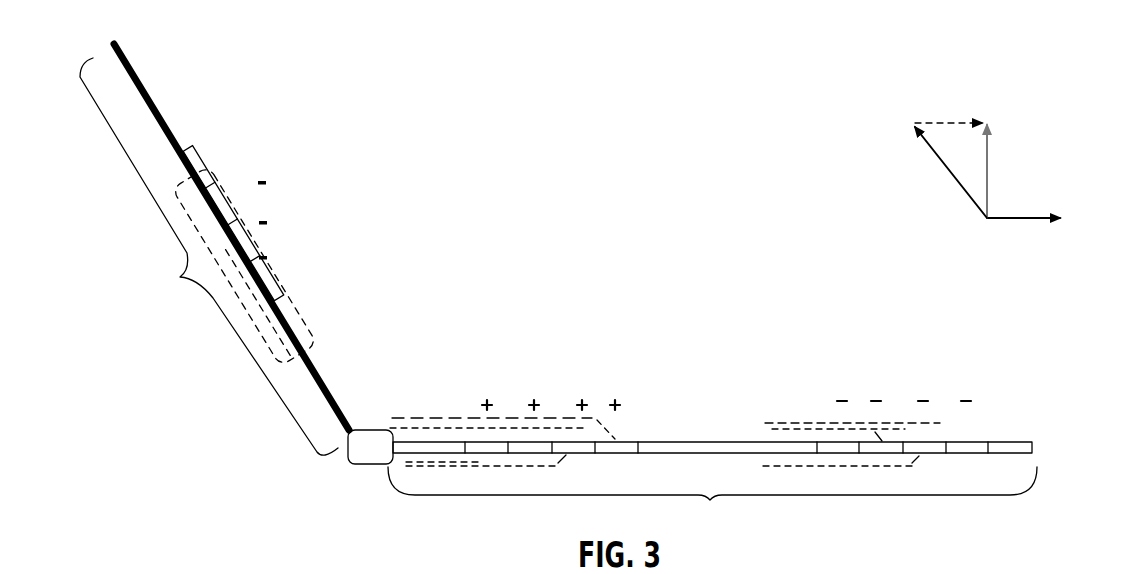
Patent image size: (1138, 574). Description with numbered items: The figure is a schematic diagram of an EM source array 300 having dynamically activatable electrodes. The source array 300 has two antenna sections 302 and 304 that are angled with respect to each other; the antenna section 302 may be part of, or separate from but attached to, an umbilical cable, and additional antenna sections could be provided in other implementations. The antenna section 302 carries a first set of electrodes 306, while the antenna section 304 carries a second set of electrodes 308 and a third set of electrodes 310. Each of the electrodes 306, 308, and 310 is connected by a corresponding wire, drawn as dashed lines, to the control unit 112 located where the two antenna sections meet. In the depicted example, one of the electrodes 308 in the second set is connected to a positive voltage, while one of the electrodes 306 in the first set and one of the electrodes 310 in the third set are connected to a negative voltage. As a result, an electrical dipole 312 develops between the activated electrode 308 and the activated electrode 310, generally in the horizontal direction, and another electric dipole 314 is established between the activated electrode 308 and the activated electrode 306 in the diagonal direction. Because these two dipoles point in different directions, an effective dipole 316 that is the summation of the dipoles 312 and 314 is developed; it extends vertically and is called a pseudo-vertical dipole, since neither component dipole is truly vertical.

The source array 300 is at (130, 219).
The antenna section 302 is at (214, 249).
The antenna section 304 is at (712, 491).
The first set of electrodes 306 is at (257, 280).
The second set of electrodes 308 is at (610, 448).
The third set of electrodes 310 is at (968, 447).
The electrical dipole 312 is at (1025, 218).
The electric dipole 314 is at (960, 180).
The effective dipole 316 is at (988, 172).
The control unit 112 is at (368, 466).